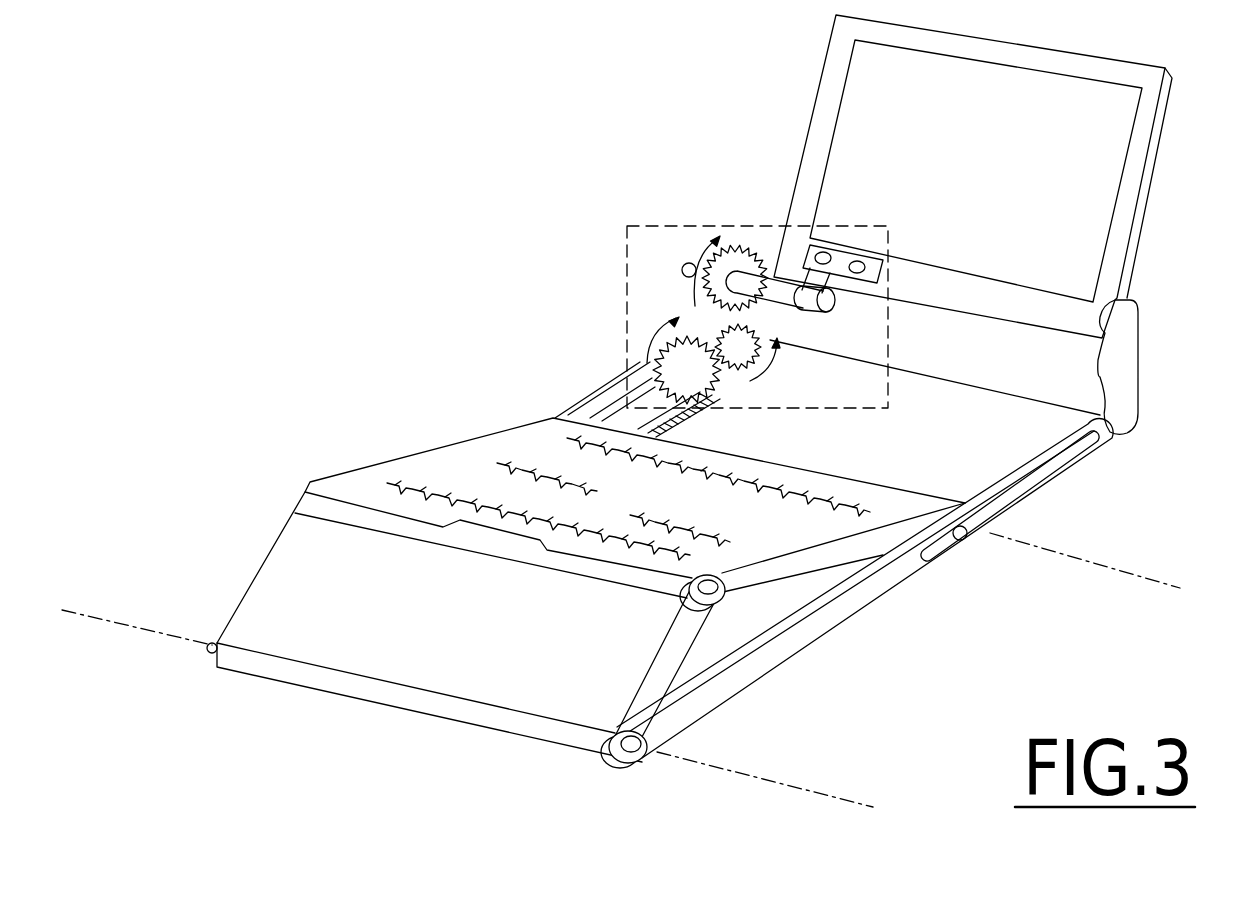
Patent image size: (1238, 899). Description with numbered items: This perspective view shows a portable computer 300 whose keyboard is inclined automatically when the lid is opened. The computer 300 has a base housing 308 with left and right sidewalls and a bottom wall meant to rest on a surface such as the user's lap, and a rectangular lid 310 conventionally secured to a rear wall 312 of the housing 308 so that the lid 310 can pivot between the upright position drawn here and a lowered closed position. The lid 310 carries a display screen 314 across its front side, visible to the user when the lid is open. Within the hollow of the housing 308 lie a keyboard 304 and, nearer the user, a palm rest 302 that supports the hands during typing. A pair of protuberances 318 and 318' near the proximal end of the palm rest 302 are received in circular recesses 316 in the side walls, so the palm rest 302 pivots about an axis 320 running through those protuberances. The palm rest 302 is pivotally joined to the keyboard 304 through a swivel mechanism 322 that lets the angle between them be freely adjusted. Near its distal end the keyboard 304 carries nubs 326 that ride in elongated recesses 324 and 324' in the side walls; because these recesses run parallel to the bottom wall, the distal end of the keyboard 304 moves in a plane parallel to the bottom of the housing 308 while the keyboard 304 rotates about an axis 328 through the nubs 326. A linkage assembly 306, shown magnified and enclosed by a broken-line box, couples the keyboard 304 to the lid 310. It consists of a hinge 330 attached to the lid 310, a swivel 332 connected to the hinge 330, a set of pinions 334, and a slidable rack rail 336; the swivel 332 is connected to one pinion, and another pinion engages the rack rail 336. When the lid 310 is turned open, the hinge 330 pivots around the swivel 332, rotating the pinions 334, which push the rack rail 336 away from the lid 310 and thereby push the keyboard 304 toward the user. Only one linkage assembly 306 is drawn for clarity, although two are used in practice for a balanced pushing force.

The portable computer 300 is at (320, 748).
The palm rest 302 is at (537, 645).
The keyboard 304 is at (810, 460).
The linkage assembly 306 is at (640, 228).
The base housing 308 is at (880, 602).
The lid 310 is at (1123, 250).
The rear wall 312 is at (1120, 397).
The display screen 314 is at (1057, 140).
The circular recess 316 is at (643, 747).
The protuberance 318 is at (670, 776).
The protuberance 318' is at (218, 618).
The axis 320 is at (527, 723).
The swivel mechanism 322 is at (717, 590).
The elongated recess 324 is at (1025, 496).
The elongated recess 324' is at (600, 384).
The nub 326 is at (960, 537).
The axis 328 is at (1147, 575).
The hinge 330 is at (843, 262).
The swivel 332 is at (772, 287).
The pinions 334 is at (690, 372).
The rack rail 336 is at (682, 430).